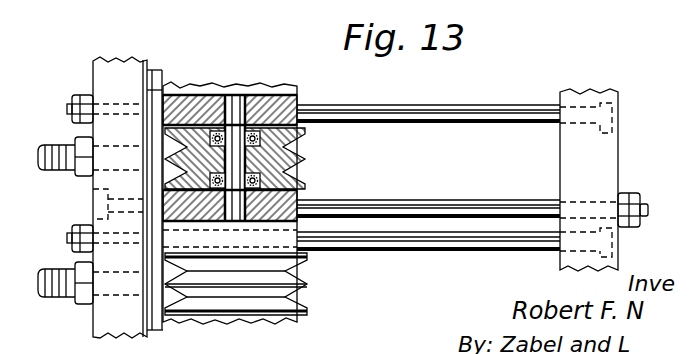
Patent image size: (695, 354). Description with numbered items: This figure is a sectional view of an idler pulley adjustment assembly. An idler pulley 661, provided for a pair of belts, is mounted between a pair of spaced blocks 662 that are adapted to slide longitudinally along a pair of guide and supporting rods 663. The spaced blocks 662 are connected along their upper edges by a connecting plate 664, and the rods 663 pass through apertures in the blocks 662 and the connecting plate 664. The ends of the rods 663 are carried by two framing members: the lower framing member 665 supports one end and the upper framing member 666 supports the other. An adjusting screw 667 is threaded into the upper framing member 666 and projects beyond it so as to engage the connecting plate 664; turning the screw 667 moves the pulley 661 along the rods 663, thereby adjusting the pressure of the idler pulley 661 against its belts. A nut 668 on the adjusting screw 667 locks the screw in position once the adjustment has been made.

The idler pulley 661 is at (303, 160).
The spaced blocks 662 is at (297, 102).
The guide and supporting rods 663 is at (479, 123).
The connecting plate 664 is at (157, 110).
The lower framing member 665 is at (610, 160).
The upper framing member 666 is at (126, 62).
The adjusting screw 667 is at (52, 145).
The nut 668 is at (85, 173).